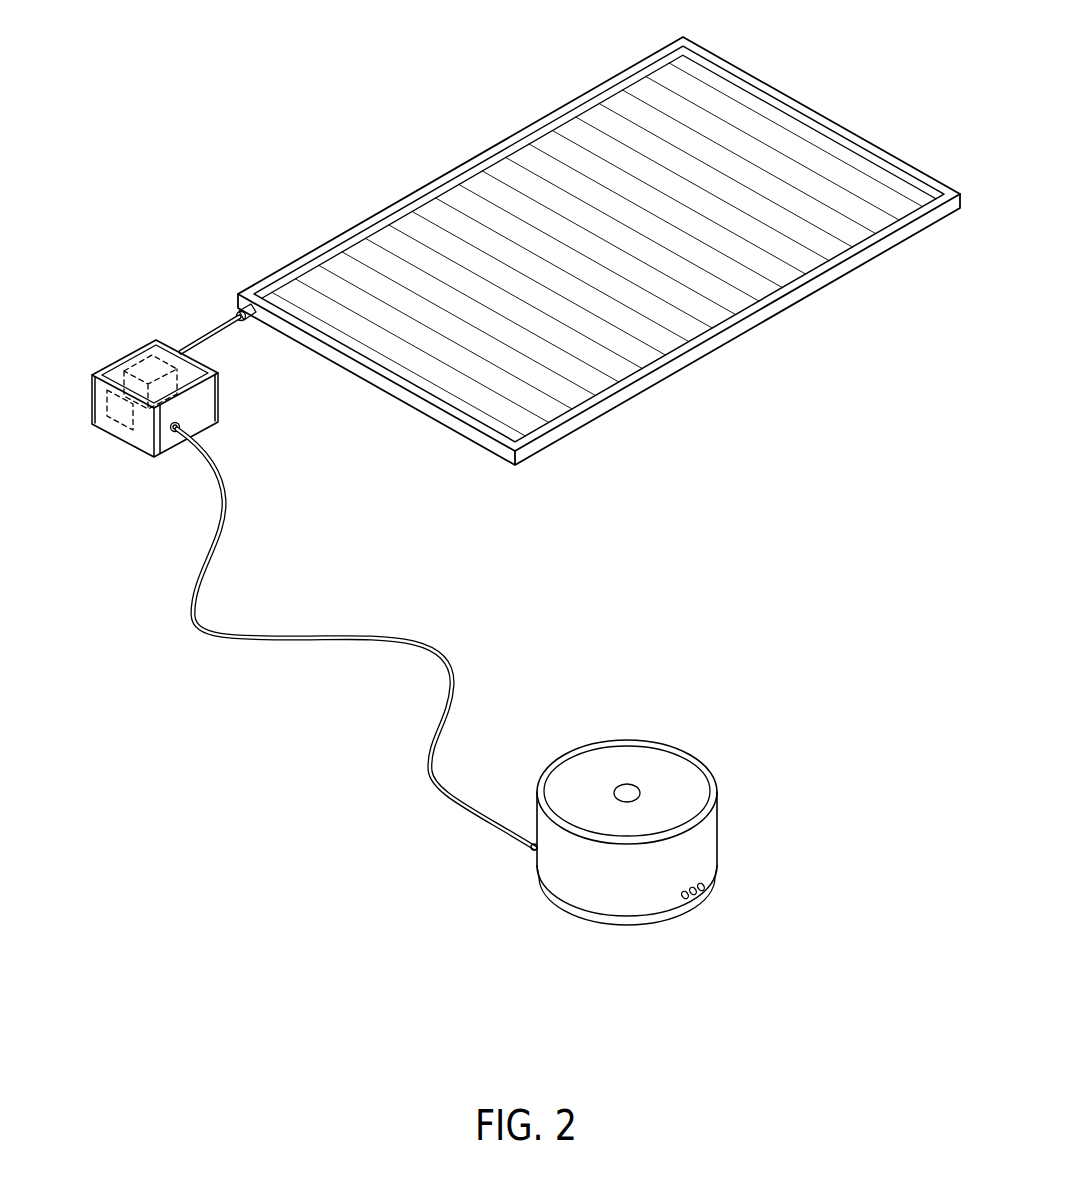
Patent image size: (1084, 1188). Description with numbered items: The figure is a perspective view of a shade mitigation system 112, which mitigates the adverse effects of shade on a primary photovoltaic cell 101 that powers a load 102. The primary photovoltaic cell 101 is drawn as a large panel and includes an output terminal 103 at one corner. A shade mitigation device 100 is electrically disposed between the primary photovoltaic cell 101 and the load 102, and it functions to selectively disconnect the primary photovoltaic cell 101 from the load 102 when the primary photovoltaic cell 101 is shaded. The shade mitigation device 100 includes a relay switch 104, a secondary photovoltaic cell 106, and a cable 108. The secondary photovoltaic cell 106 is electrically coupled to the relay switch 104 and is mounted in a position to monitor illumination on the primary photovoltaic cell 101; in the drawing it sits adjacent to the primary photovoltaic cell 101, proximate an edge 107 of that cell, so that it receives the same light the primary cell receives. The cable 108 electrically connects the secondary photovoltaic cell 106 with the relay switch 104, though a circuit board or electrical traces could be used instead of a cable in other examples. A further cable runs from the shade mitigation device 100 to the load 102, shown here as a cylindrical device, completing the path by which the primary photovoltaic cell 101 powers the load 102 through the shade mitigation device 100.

The shade mitigation system 112 is at (110, 244).
The shade mitigation device 100 is at (80, 356).
The primary photovoltaic cell 101 is at (712, 55).
The edge 107 is at (377, 375).
The output terminal 103 is at (247, 322).
The secondary photovoltaic cell 106 is at (155, 340).
The cable 108 is at (127, 372).
The relay switch 104 is at (124, 421).
The load 102 is at (690, 783).